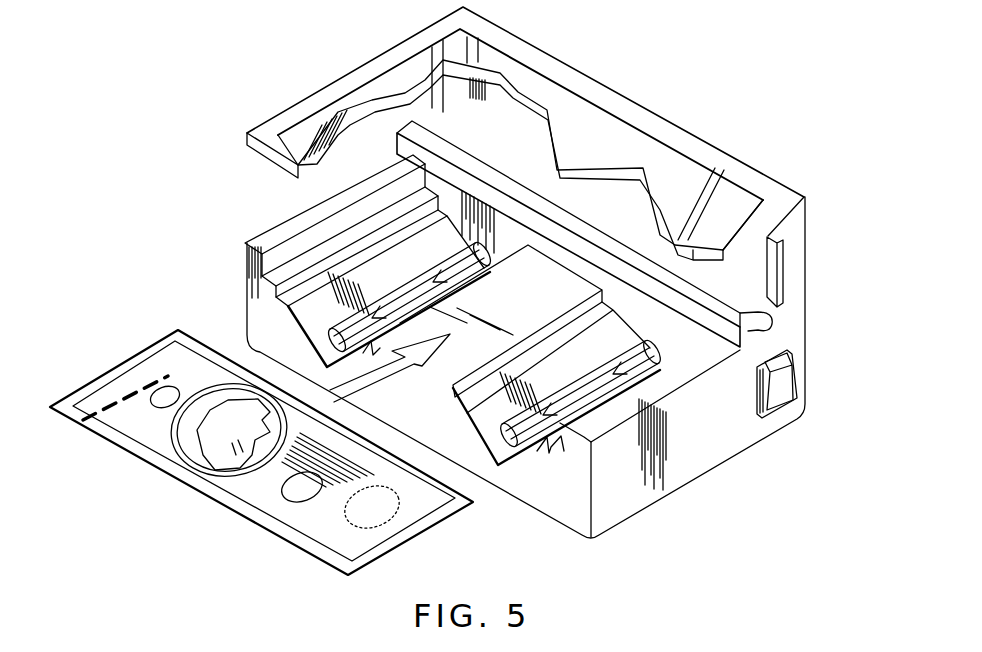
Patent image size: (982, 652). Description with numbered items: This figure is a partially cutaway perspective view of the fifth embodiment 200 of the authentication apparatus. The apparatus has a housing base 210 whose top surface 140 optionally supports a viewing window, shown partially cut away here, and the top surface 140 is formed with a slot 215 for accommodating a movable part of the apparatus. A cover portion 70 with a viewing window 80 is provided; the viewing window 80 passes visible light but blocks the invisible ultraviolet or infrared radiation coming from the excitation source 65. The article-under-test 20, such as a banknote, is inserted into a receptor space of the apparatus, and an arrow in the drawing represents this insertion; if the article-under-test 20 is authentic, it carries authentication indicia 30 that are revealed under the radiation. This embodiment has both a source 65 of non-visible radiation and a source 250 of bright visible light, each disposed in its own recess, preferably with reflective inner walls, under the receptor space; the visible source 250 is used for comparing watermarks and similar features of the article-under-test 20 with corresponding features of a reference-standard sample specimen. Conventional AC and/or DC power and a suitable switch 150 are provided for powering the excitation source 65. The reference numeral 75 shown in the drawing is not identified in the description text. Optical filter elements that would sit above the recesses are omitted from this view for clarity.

The article-under-test 20 is at (418, 530).
The authentication indicia 30 is at (154, 374).
The excitation source 65 is at (333, 343).
The cover portion 70 is at (687, 140).
The chute plate 75 is at (507, 105).
The viewing window 80 is at (610, 130).
The top surface 140 is at (511, 296).
The switch 150 is at (783, 400).
The fifth embodiment 200 is at (457, 123).
The housing base 210 is at (250, 292).
The slot 215 is at (774, 323).
The source of bright visible light 250 is at (497, 437).